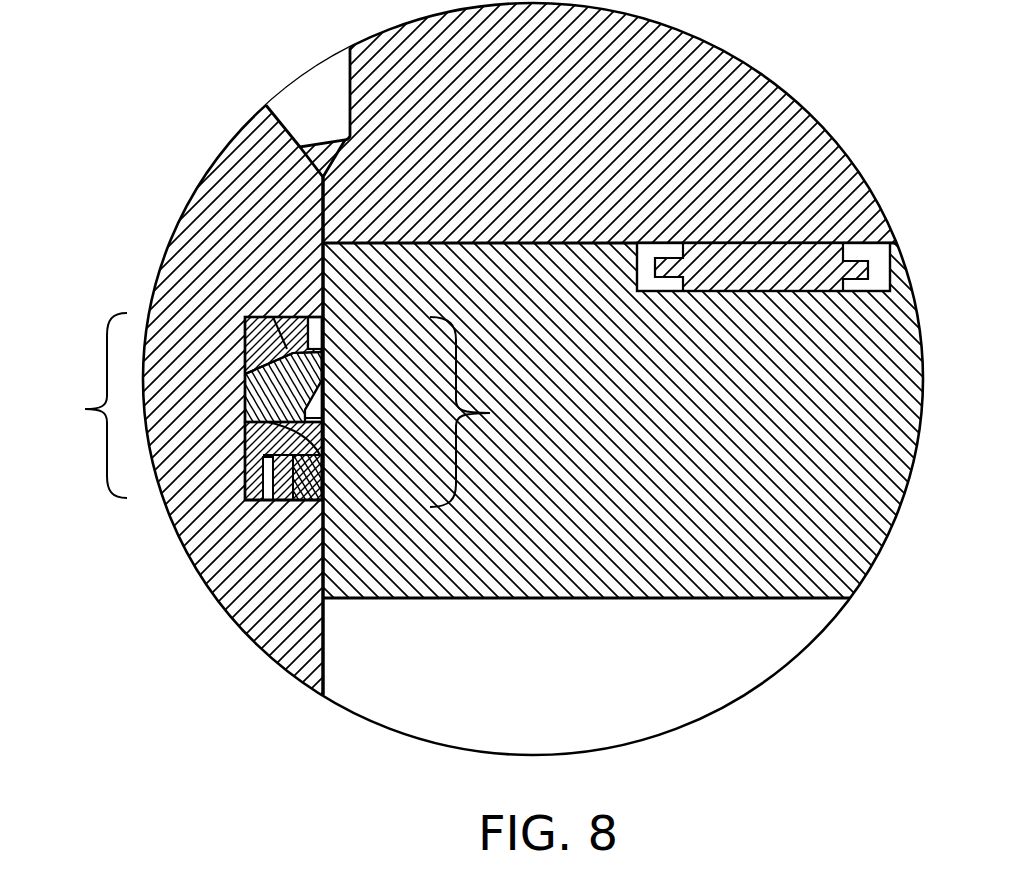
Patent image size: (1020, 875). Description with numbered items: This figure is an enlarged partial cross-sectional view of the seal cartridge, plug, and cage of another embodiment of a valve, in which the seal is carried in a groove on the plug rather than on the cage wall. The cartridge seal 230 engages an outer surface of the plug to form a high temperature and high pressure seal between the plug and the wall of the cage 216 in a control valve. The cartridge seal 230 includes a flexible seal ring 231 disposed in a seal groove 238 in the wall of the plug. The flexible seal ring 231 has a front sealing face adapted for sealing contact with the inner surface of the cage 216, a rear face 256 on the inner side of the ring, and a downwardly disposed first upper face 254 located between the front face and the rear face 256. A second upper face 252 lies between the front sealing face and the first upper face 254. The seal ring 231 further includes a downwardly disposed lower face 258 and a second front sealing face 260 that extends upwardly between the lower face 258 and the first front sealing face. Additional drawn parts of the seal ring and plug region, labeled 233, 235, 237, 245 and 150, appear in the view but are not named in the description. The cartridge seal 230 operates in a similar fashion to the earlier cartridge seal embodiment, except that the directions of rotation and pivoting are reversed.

The seal 150 is at (327, 365).
The cage 216 is at (717, 449).
The cartridge seal 230 is at (492, 412).
The flexible seal ring 231 is at (268, 421).
The upper block 233 is at (270, 348).
The lower block 235 is at (250, 450).
The bottom wall 237 is at (306, 503).
The seal groove 238 is at (80, 405).
The housing wall 245 is at (292, 594).
The second upper face 252 is at (323, 340).
The first upper face 254 is at (285, 345).
The rear face 256 is at (247, 384).
The lower face 258 is at (324, 468).
The second front sealing face 260 is at (326, 398).